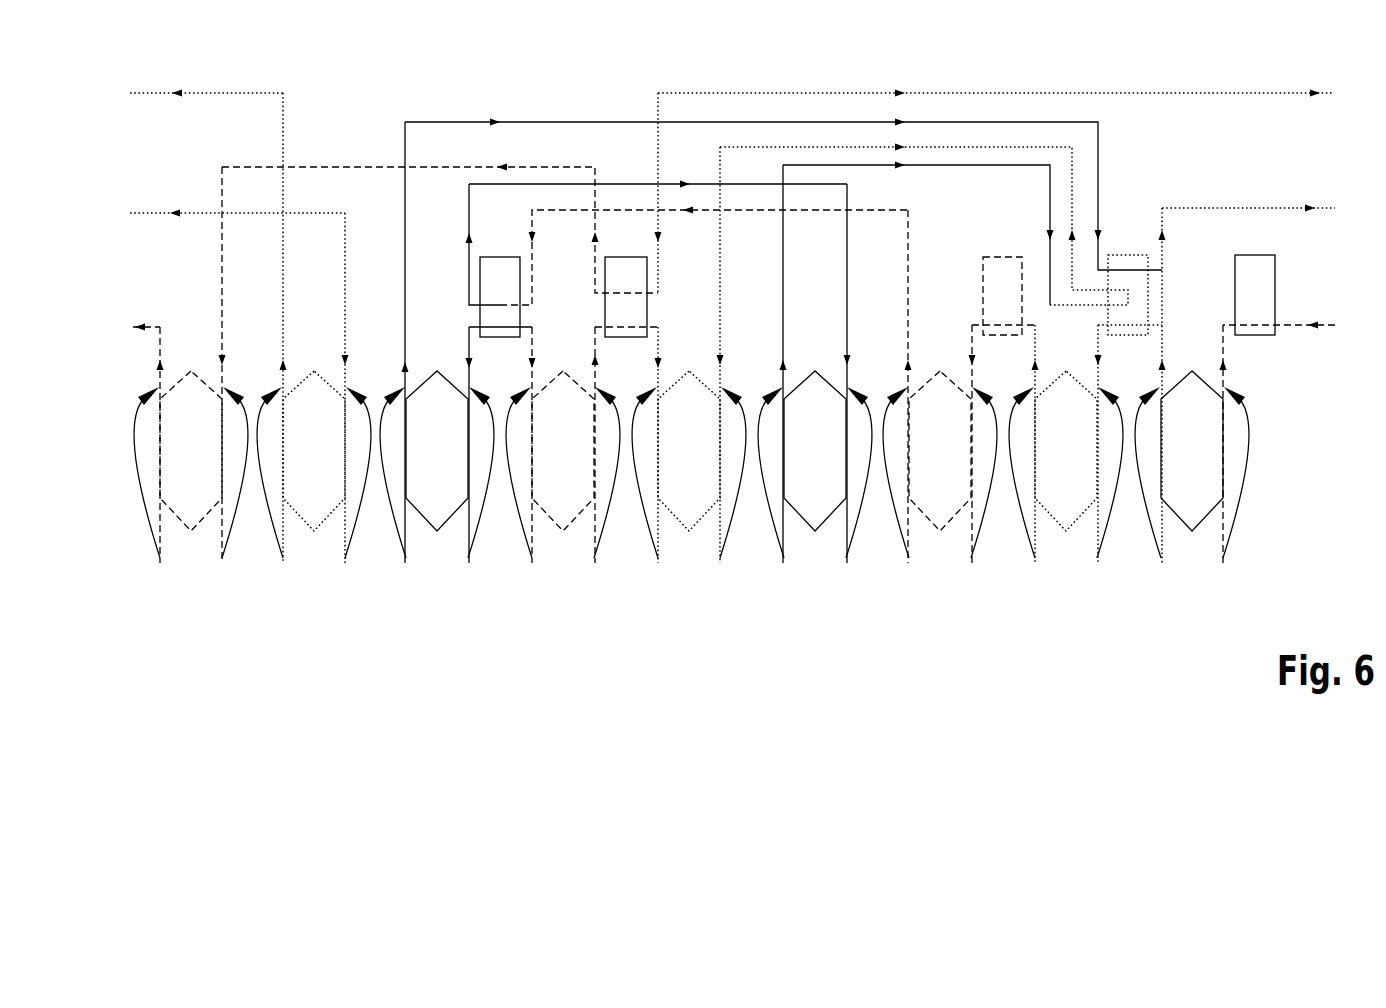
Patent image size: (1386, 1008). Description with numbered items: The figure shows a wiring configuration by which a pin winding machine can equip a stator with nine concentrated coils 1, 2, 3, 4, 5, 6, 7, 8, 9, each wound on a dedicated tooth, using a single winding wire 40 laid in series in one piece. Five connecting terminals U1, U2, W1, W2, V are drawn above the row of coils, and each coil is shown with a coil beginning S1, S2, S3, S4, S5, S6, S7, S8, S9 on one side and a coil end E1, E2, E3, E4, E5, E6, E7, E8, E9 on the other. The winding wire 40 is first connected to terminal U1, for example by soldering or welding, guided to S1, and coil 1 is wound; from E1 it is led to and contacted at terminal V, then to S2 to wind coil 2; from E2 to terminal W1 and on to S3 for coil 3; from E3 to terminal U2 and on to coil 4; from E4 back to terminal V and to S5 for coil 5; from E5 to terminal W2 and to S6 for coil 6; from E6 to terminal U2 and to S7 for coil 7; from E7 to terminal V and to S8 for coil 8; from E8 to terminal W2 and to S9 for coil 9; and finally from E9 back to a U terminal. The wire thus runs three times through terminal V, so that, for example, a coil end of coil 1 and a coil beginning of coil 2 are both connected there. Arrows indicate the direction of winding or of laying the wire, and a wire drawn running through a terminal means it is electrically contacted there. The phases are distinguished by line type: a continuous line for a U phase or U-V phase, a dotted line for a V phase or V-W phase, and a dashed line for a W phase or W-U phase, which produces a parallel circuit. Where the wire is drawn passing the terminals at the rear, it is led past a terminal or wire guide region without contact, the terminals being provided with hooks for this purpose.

The coil 1 is at (1185, 467).
The coil 2 is at (1059, 467).
The coil 3 is at (933, 467).
The coil 4 is at (808, 467).
The coil 5 is at (682, 467).
The coil 6 is at (556, 467).
The coil 7 is at (430, 467).
The coil 8 is at (307, 467).
The coil 9 is at (184, 467).
The winding wire 40 is at (878, 203).
The terminal U1 is at (1255, 282).
The terminal U2 is at (500, 283).
The terminal W1 is at (1003, 282).
The terminal W2 is at (627, 283).
The terminal V is at (1130, 282).
The coil end E1 is at (1162, 400).
The coil beginning S1 is at (1223, 459).
The coil end E2 is at (1035, 459).
The coil beginning S2 is at (1098, 459).
The coil end E3 is at (908, 401).
The coil beginning S3 is at (972, 459).
The coil end E4 is at (783, 379).
The coil beginning S4 is at (847, 388).
The coil end E5 is at (658, 460).
The coil beginning S5 is at (720, 370).
The coil end E6 is at (532, 460).
The coil beginning S6 is at (595, 460).
The coil end E7 is at (405, 357).
The coil beginning S7 is at (469, 460).
The coil end E8 is at (283, 343).
The coil beginning S8 is at (345, 403).
The coil end E9 is at (160, 460).
The coil beginning S9 is at (222, 380).